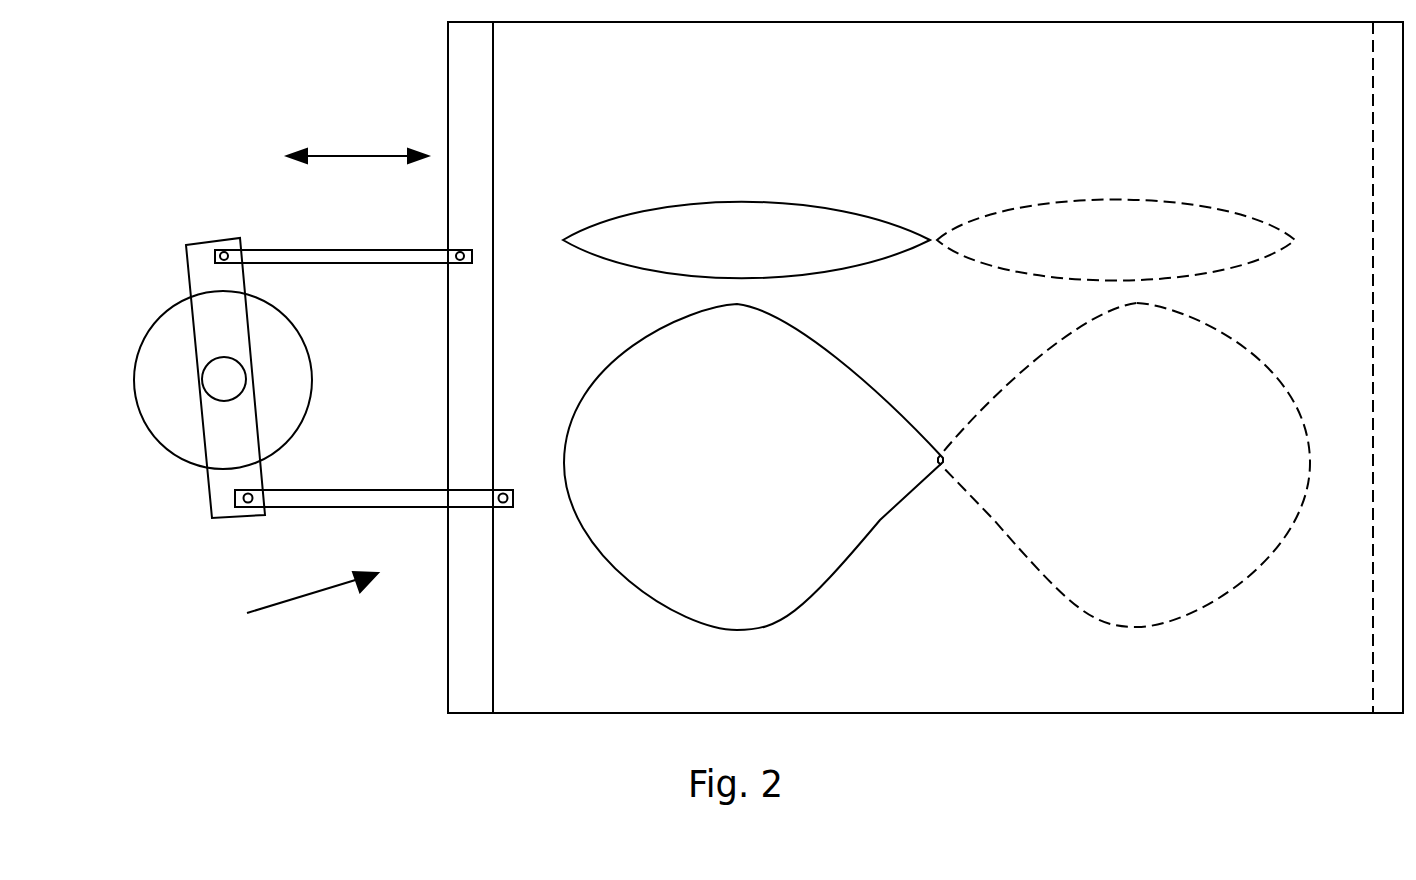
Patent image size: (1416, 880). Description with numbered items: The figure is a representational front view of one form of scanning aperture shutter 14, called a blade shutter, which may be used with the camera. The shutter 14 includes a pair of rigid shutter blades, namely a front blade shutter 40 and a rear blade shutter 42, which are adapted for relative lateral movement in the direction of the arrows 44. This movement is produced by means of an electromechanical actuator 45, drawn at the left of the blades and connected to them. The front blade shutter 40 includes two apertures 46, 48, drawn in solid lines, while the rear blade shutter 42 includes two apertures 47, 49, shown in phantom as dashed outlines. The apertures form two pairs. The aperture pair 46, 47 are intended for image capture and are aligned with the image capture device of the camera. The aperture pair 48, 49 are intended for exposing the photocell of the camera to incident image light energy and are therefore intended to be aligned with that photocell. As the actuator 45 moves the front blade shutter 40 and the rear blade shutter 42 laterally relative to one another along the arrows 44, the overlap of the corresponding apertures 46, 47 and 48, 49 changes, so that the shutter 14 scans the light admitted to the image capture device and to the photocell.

The scanning aperture shutter 14 is at (289, 605).
The front blade shutter 40 is at (545, 679).
The rear blade shutter 42 is at (468, 665).
The arrows 44 is at (367, 155).
The electromechanical actuator 45 is at (167, 337).
The aperture 46 is at (752, 575).
The aperture 47 is at (1078, 562).
The aperture 48 is at (740, 222).
The aperture 49 is at (1117, 222).